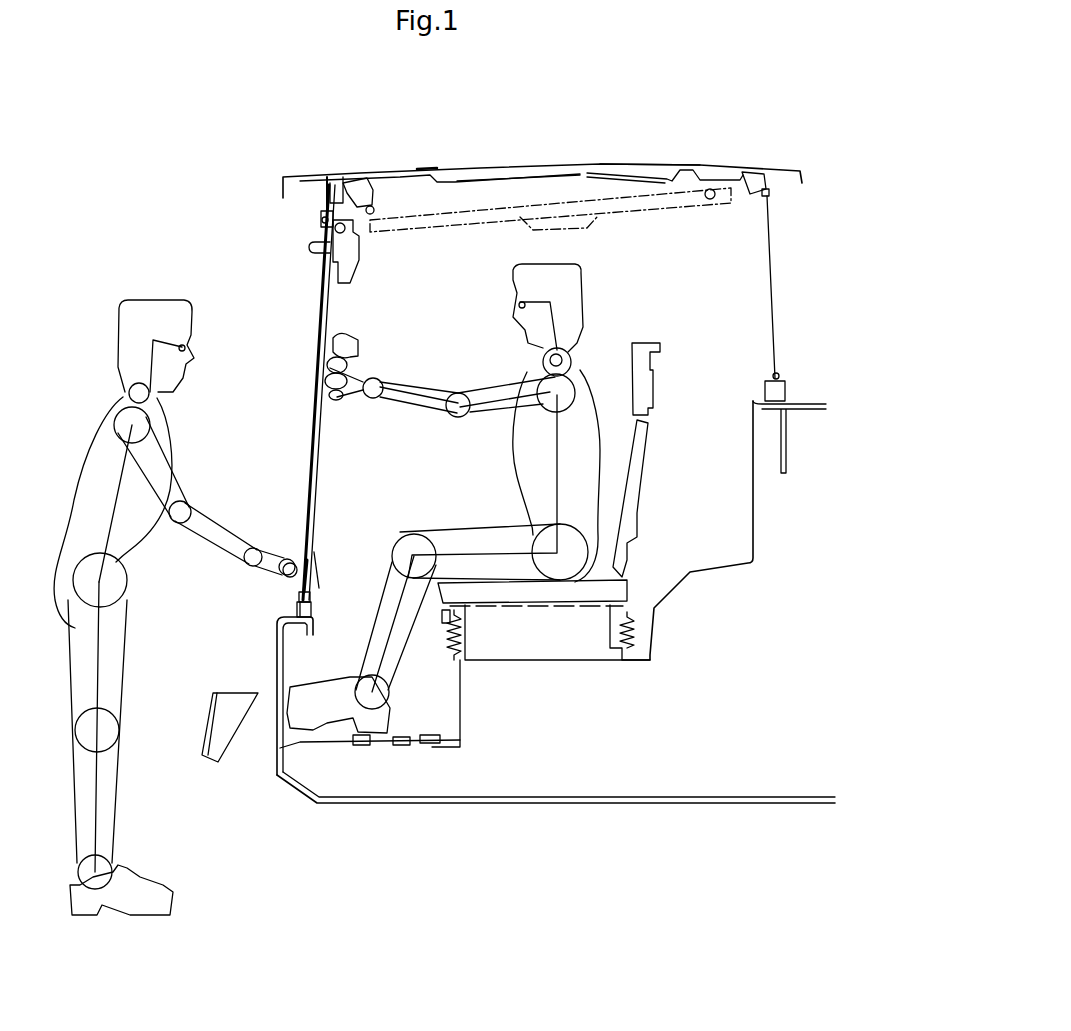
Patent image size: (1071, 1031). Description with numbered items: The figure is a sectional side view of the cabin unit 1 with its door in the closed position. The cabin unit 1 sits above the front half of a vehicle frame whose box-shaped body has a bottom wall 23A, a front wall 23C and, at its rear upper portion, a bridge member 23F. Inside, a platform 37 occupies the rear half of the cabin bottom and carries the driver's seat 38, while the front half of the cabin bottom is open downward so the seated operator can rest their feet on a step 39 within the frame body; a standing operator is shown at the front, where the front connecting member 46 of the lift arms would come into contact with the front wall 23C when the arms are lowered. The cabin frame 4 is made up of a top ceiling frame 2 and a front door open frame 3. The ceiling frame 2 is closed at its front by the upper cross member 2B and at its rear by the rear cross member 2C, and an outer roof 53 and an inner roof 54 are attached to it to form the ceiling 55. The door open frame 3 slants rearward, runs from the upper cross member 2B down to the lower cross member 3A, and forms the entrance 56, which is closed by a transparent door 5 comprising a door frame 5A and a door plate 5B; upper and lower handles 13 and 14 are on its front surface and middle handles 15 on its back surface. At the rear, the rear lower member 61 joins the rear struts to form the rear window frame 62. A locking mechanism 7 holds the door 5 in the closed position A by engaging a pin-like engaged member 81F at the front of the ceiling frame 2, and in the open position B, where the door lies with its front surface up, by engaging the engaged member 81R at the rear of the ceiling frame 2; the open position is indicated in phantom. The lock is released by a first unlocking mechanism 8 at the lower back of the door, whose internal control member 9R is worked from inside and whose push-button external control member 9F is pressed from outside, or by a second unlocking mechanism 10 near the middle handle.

The cabin unit 1 is at (241, 170).
The top ceiling frame 2 is at (352, 170).
The upper cross member 2B is at (321, 218).
The rear cross member 2C is at (762, 186).
The front door open frame 3 is at (319, 194).
The lower cross member 3A is at (311, 607).
The cabin frame 4 is at (372, 103).
The door 5 is at (243, 413).
The door frame 5A is at (320, 425).
The door plate 5B is at (316, 468).
The locking mechanism 7 is at (360, 273).
The first unlocking mechanism 8 is at (325, 564).
The external control member 9F is at (256, 571).
The internal control member 9R is at (318, 535).
The second unlocking mechanism 10 is at (358, 337).
The upper handle 13 is at (287, 578).
The lower handle 14 is at (310, 248).
The middle handle 15 is at (337, 403).
The bottom wall 23A is at (372, 806).
The front wall 23C is at (277, 657).
The bridge member 23F is at (789, 460).
The platform 37 is at (522, 661).
The driver's seat 38 is at (578, 598).
The step 39 is at (418, 745).
The front connecting member 46 is at (212, 712).
The outer roof 53 is at (522, 165).
The inner roof 54 is at (607, 168).
The ceiling 55 is at (642, 158).
The entrance 56 is at (310, 592).
The rear lower member 61 is at (787, 388).
The rear window frame 62 is at (777, 287).
The engaged member 81F is at (343, 223).
The engaged member 81R is at (710, 188).
The closed position A is at (306, 325).
The open position B is at (636, 220).